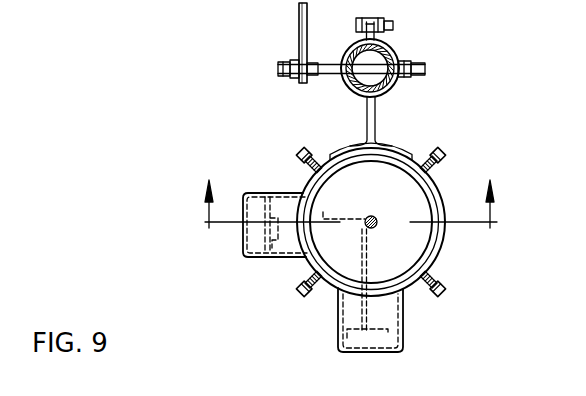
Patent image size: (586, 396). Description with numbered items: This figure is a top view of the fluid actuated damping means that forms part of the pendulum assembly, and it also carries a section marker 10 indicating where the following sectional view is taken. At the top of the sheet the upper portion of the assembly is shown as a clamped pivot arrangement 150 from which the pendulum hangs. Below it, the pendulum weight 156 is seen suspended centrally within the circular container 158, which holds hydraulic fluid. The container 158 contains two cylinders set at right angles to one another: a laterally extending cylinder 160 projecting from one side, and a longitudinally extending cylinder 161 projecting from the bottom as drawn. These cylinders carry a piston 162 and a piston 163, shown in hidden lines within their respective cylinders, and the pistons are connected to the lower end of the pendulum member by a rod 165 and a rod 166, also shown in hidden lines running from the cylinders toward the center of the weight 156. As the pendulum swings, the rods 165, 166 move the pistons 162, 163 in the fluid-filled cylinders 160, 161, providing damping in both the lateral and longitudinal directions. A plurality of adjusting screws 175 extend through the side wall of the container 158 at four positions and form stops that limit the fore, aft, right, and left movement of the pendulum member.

The section line 10- 10 is at (352, 193).
The upper clamp assembly 150 is at (398, 56).
The weight 156 is at (438, 253).
The container 158 is at (437, 271).
The laterally extending cylinder 160 is at (243, 230).
The longitudinally extending cylinder 161 is at (401, 320).
The piston 162 is at (272, 256).
The piston 163 is at (345, 342).
The rod 165 is at (328, 200).
The rod 166 is at (366, 250).
The adjusting screws 175 is at (442, 151).